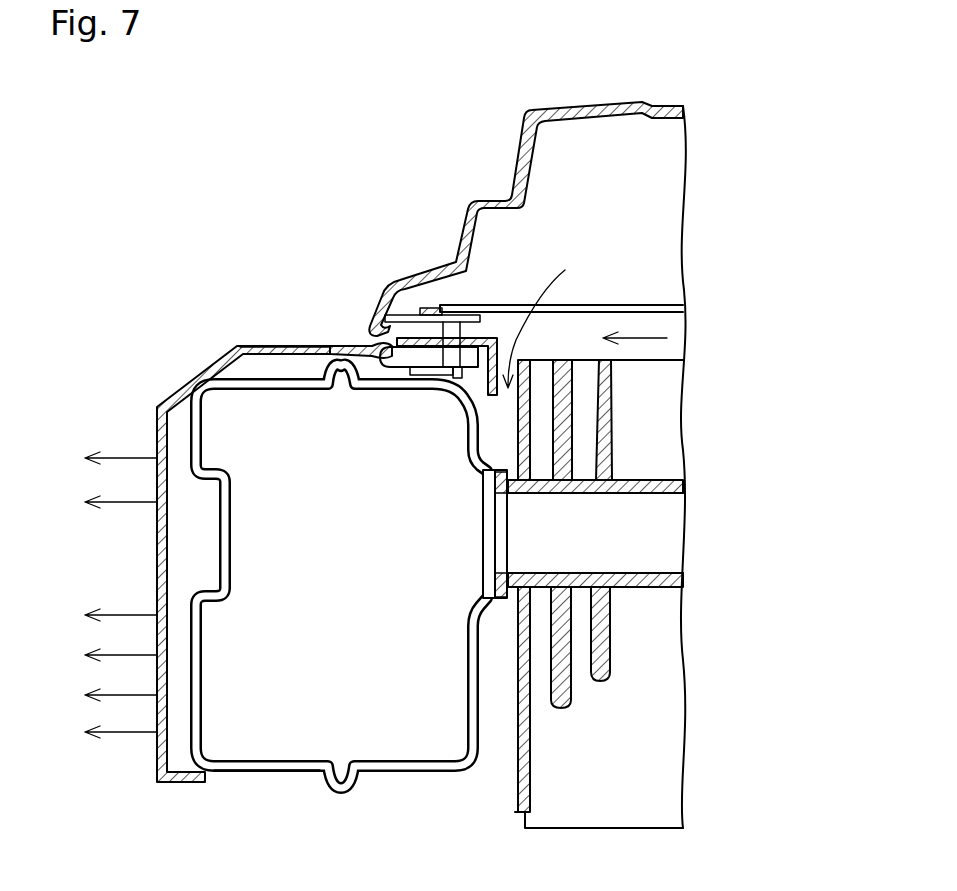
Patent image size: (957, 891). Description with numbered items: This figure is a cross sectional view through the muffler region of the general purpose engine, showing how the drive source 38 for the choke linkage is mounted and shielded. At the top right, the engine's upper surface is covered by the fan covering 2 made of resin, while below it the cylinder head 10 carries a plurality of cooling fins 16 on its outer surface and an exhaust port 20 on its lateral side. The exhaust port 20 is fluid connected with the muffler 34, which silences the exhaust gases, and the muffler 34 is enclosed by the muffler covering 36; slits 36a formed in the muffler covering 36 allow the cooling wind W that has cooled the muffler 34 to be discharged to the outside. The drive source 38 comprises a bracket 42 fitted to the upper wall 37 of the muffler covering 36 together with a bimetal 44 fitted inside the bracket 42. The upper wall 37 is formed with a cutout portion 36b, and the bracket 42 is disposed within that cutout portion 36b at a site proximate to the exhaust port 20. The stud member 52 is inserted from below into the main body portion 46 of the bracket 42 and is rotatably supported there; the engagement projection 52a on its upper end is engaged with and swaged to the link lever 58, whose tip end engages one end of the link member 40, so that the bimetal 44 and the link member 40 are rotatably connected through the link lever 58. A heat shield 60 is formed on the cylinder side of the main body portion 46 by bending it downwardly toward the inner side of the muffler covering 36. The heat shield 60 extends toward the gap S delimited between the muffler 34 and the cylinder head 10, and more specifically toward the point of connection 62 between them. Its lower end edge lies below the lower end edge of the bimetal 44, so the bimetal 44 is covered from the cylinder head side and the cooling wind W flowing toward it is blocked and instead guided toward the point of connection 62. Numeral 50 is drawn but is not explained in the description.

The fan covering 2 is at (590, 113).
The cylinder head 10 is at (602, 703).
The cooling fins 16 is at (612, 447).
The exhaust port 20 is at (488, 545).
The muffler 34 is at (248, 782).
The muffler covering 36 is at (160, 430).
The slits 36a is at (157, 460).
The cutout portion 36b is at (380, 340).
The upper wall 37 is at (240, 348).
The drive source 38 is at (373, 377).
The link member 40 is at (620, 305).
The bracket 42 is at (500, 326).
The bimetal 44 is at (398, 358).
The main body portion 46 is at (388, 293).
The joint portion 50 is at (320, 347).
The stud member 52 is at (423, 265).
The engagement projection 52a is at (428, 307).
The link lever 58 is at (372, 322).
The heat shield 60 is at (520, 390).
The point of connection 62 is at (507, 497).
The gap S is at (487, 427).
The cooling wind W is at (135, 615).